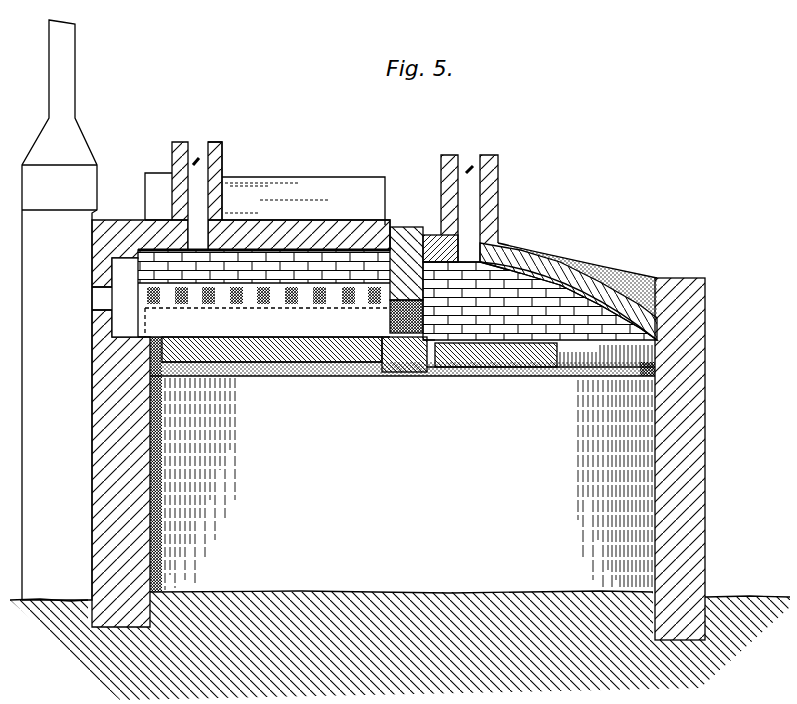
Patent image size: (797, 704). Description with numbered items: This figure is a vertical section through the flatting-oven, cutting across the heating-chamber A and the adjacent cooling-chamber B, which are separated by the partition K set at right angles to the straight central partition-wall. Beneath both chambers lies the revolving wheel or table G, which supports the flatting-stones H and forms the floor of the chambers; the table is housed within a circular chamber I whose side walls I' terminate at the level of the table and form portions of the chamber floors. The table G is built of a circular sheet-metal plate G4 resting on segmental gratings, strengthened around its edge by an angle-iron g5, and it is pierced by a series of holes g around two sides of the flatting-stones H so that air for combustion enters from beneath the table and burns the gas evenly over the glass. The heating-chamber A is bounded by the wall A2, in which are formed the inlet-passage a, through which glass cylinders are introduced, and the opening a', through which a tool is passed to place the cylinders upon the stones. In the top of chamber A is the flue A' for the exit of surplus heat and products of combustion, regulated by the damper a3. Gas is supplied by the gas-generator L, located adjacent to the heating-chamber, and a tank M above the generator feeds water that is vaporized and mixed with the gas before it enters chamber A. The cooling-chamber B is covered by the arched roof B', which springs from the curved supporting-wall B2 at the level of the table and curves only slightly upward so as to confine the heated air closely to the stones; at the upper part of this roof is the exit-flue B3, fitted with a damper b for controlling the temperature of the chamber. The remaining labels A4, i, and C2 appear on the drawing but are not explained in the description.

The gas-generator L is at (59, 310).
The wall of heating-chamber A2 is at (123, 231).
The flue A' is at (267, 226).
The opening a' is at (278, 297).
The damper a3 is at (198, 158).
The pipe wall A4 is at (223, 163).
The tank M is at (265, 199).
The heating-chamber A is at (264, 293).
The openings i is at (180, 303).
The partition K is at (406, 280).
The cooling-chamber B is at (540, 305).
The curved supporting-wall B2 is at (540, 301).
The arched roof B' is at (568, 272).
The end wall C2 is at (680, 313).
The damper b is at (471, 167).
The exit-flue B3 is at (494, 171).
The flatting-stones H is at (258, 348).
The holes g is at (388, 376).
The circular sheet-metal plate G4 is at (479, 376).
The revolving table G is at (318, 370).
The angle-iron g5 is at (657, 371).
The inlet-passage a is at (429, 325).
The side walls I' is at (442, 464).
The circular chamber I is at (402, 484).